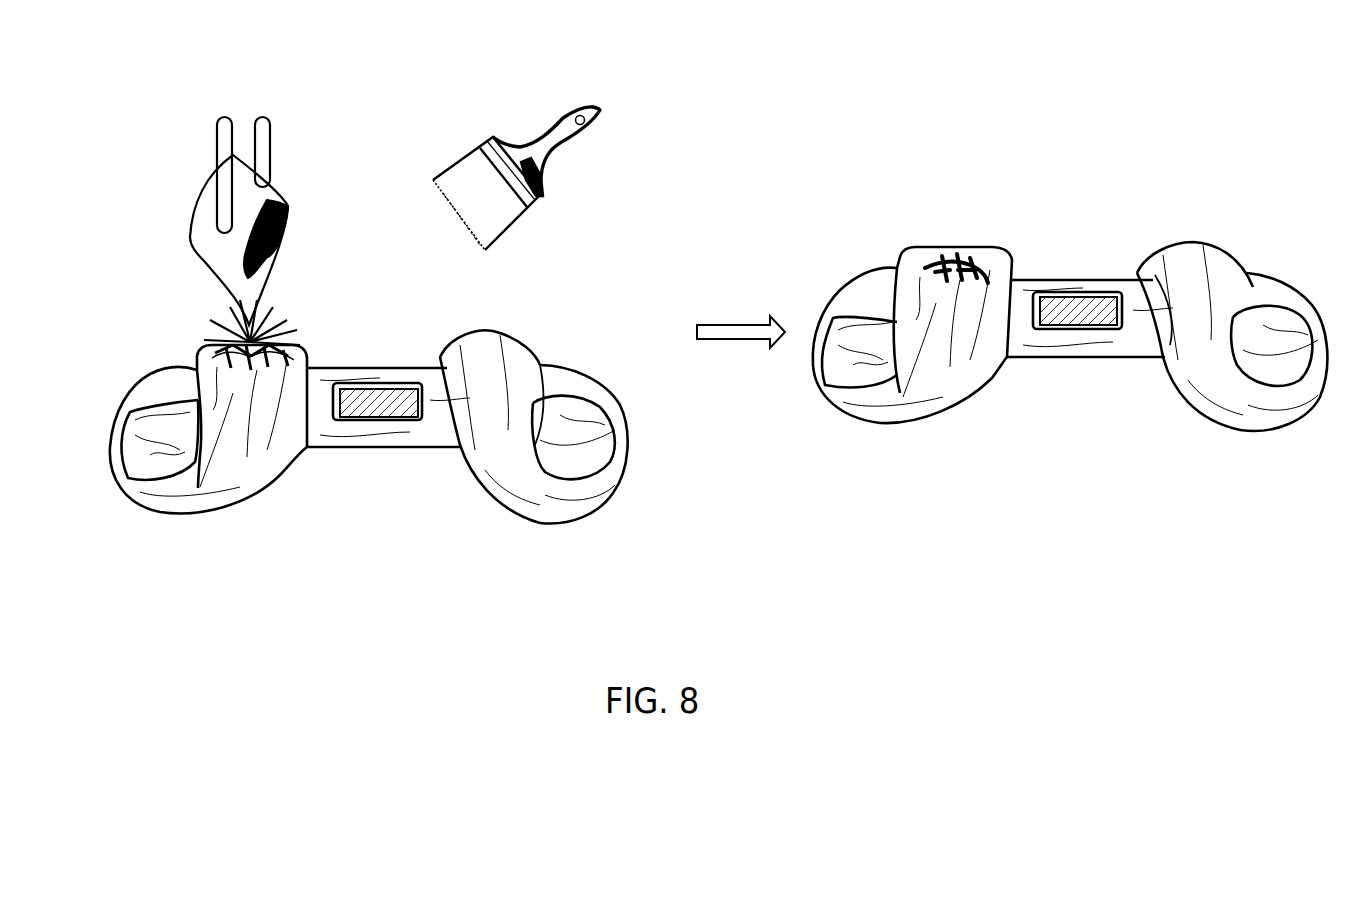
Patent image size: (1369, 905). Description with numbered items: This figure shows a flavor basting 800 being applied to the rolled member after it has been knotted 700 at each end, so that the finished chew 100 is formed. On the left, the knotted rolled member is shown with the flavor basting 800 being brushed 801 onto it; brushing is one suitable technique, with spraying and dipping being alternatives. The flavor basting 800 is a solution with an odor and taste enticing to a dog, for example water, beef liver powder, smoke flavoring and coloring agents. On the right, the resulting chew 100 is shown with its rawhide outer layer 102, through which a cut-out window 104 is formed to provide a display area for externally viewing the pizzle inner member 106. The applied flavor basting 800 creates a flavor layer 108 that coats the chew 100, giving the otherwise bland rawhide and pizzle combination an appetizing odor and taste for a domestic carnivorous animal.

The chew 100 is at (860, 203).
The rawhide outer layer 102 is at (964, 395).
The cut-out window 104 is at (1067, 292).
The inner member 106 is at (1087, 312).
The flavor layer 108 is at (193, 370).
The knotted 700 is at (422, 452).
The flavor basting 800 is at (253, 307).
The brushed 801 is at (517, 222).